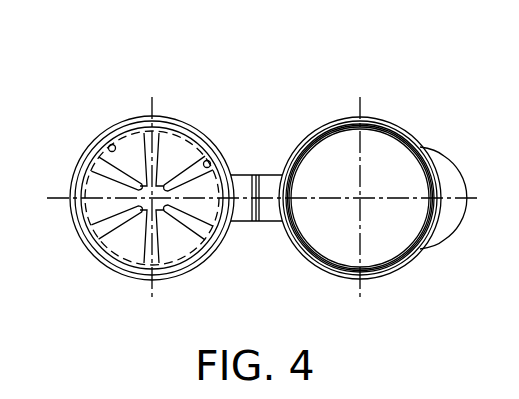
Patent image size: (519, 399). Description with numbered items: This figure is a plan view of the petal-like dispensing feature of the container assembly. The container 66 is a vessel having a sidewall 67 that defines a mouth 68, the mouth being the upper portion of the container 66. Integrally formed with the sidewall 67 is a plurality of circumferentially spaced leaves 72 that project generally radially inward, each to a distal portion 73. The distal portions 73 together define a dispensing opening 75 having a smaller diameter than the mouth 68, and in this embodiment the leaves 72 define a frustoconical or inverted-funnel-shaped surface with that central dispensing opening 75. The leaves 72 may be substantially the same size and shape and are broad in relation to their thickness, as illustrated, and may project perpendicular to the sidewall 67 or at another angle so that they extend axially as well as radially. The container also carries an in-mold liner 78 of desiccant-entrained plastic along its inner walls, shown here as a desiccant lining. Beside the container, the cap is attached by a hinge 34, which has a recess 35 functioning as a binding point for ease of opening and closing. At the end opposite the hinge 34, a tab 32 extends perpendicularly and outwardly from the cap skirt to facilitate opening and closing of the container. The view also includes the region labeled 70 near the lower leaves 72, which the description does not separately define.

The tab 32 is at (450, 183).
The hinge 34 is at (272, 222).
The recess 35 is at (253, 175).
The container 66 is at (178, 96).
The sidewall 67 is at (380, 117).
The mouth 68 is at (217, 158).
The lower radial vane 70 is at (87, 236).
The leaves 72 is at (121, 164).
The distal portion 73 is at (90, 217).
The dispensing opening 75 is at (100, 172).
The in-mold liner 78 is at (112, 144).